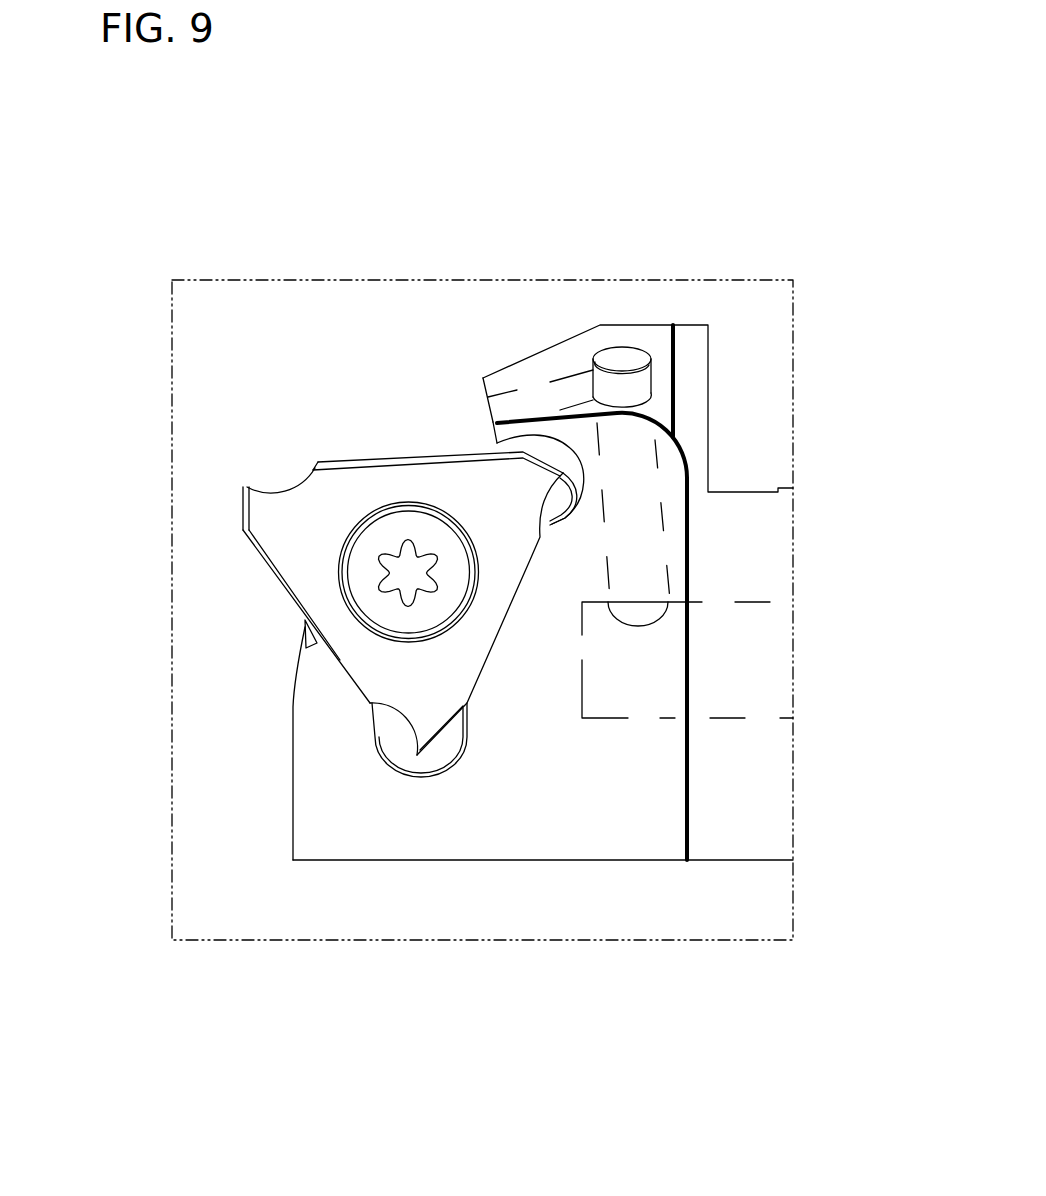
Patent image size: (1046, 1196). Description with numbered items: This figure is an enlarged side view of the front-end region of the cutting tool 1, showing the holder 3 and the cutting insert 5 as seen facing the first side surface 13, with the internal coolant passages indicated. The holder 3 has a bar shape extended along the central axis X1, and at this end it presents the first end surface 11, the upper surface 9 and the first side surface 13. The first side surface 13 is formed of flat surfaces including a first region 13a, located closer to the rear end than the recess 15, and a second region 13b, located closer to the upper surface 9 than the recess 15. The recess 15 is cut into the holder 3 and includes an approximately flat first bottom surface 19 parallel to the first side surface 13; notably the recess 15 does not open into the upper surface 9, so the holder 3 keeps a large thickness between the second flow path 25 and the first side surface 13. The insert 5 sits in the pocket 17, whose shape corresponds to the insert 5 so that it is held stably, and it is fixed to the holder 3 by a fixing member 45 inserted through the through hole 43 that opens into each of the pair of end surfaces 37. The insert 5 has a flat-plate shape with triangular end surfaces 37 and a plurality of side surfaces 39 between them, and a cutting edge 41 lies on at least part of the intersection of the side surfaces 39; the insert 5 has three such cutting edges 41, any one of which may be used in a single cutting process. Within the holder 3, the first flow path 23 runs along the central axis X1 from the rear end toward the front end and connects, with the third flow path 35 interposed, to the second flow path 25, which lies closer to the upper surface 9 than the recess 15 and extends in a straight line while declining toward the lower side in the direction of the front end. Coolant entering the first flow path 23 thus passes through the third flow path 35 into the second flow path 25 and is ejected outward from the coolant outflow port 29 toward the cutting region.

The cutting tool 1 is at (233, 225).
The holder 3 is at (474, 606).
The upper surface 9 is at (693, 327).
The first end surface 11 is at (296, 762).
The first side surface 13 is at (612, 267).
The first region 13a is at (742, 822).
The second region 13b is at (645, 340).
The cutting insert 5 is at (304, 627).
The end surfaces 37 is at (495, 600).
The side surfaces 39 is at (360, 460).
The cutting edge 41 is at (243, 487).
The through hole 43 is at (345, 573).
The recess 15 is at (660, 828).
The first bottom surface 19 is at (610, 783).
The pocket 17 is at (393, 745).
The first flow path 23 is at (725, 720).
The second flow path 25 is at (570, 372).
The coolant outflow port 29 is at (493, 406).
The third flow path 35 is at (663, 537).
The fixing member 45 is at (408, 575).
The central axis X1 is at (293, 602).